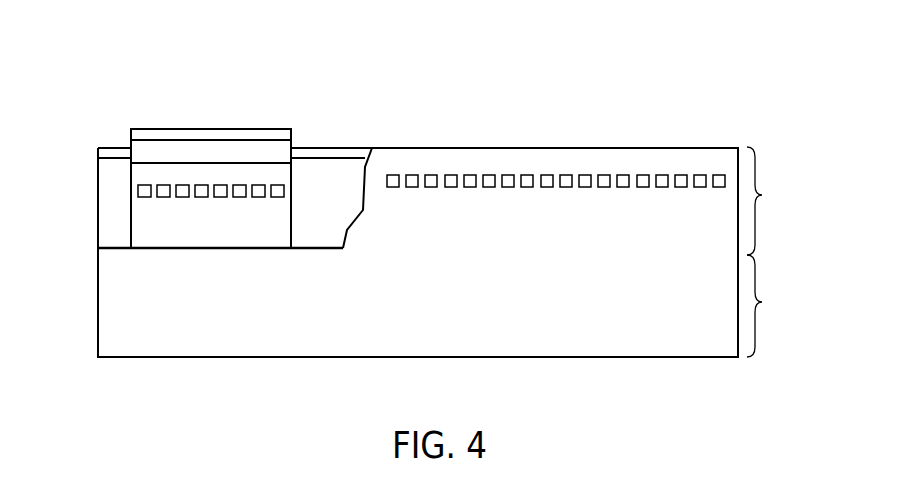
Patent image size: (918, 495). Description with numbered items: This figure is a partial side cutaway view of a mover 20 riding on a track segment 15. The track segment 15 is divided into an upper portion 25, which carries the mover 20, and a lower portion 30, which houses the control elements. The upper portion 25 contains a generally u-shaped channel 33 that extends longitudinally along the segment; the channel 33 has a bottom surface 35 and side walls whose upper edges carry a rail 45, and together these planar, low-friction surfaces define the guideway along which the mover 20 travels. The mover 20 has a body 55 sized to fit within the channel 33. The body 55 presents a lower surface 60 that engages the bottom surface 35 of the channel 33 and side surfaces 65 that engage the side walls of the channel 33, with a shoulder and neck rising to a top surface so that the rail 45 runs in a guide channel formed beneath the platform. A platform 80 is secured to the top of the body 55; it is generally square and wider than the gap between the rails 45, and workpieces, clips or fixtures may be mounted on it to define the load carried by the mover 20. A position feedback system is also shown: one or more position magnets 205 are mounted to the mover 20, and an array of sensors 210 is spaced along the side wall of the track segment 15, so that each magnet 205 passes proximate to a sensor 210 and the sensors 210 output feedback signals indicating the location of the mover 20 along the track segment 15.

The track segment 15 is at (702, 122).
The mover 20 is at (208, 128).
The upper portion 25 is at (762, 195).
The lower portion 30 is at (762, 302).
The channel 33 is at (110, 202).
The bottom surface 35 is at (320, 248).
The rail 45 is at (348, 147).
The body 55 is at (222, 230).
The lower surface 60 is at (175, 250).
The side surfaces 65 is at (196, 236).
The platform 80 is at (155, 135).
The position magnets 205 is at (240, 197).
The sensors 210 is at (562, 187).